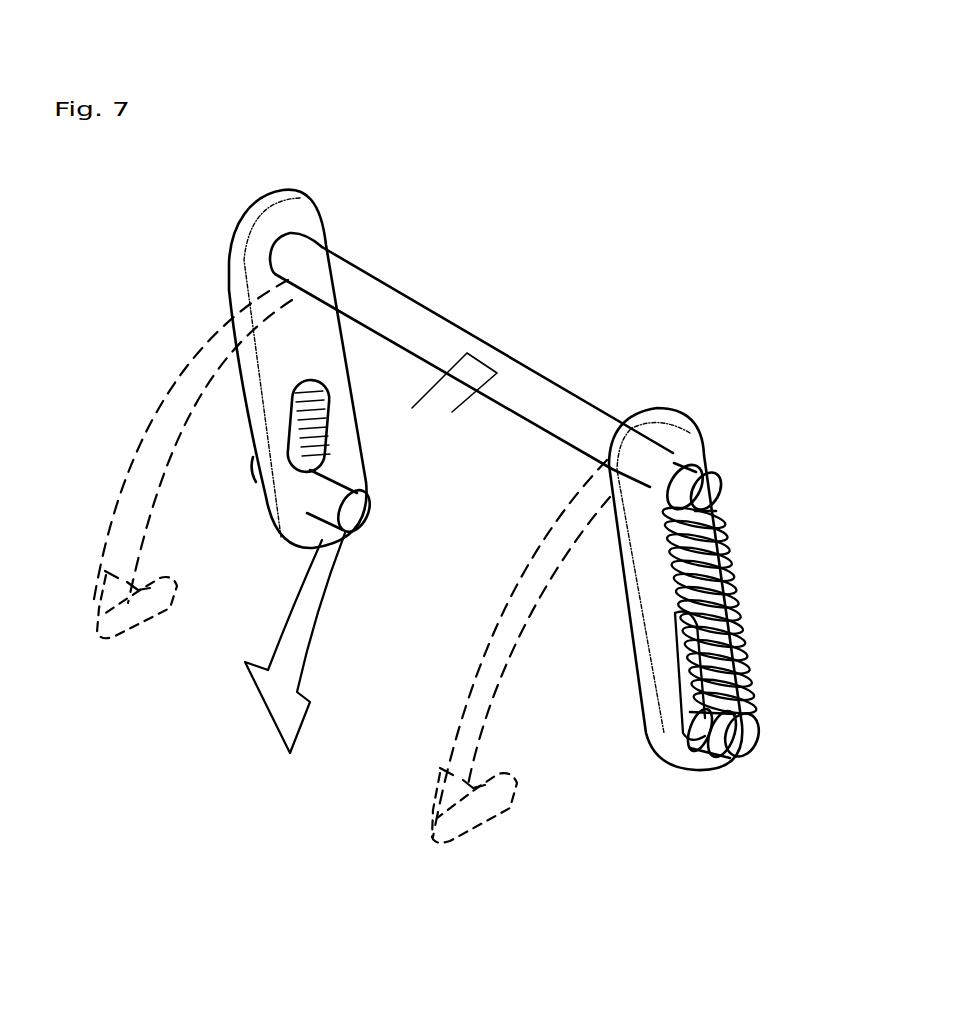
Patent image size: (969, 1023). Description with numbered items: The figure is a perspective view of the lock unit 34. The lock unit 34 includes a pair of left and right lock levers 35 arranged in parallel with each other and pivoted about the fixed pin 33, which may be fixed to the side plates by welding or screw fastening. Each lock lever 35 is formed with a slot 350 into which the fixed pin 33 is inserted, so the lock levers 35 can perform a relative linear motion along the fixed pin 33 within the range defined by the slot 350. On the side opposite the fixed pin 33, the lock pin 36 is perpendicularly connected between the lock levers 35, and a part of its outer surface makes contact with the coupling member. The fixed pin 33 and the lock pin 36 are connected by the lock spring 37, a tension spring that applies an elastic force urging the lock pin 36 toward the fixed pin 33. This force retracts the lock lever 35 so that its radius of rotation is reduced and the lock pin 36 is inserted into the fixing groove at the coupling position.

The lock unit 34 is at (443, 199).
The lock pin 36 is at (547, 400).
The lock lever 35 is at (653, 587).
The lock spring 37 is at (724, 590).
The fixed pin 33 is at (740, 736).
The slot 350 is at (683, 653).